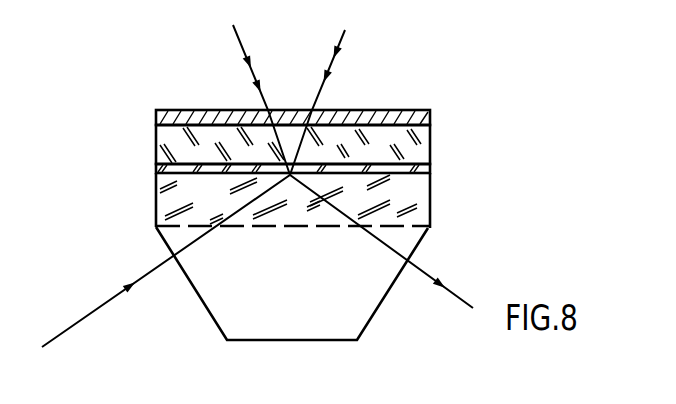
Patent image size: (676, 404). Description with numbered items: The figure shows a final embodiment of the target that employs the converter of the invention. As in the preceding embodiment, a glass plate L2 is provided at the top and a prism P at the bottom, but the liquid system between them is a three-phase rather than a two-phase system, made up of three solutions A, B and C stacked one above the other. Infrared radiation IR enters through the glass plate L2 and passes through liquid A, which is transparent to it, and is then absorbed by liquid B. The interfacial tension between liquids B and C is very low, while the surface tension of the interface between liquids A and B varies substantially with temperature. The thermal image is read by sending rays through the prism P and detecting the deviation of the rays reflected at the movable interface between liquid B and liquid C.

The glass plate L2 is at (430, 112).
The liquid A is at (420, 148).
The liquid B is at (423, 170).
The liquid C is at (413, 203).
The prism P is at (368, 290).
The infrared radiation IR is at (257, 186).